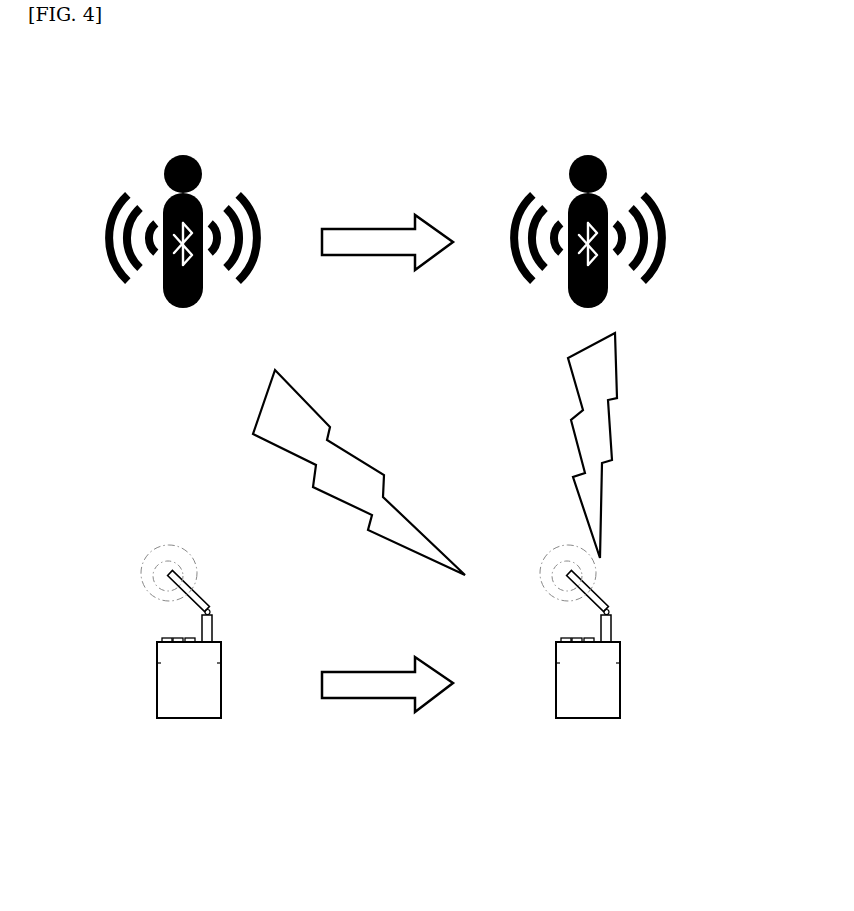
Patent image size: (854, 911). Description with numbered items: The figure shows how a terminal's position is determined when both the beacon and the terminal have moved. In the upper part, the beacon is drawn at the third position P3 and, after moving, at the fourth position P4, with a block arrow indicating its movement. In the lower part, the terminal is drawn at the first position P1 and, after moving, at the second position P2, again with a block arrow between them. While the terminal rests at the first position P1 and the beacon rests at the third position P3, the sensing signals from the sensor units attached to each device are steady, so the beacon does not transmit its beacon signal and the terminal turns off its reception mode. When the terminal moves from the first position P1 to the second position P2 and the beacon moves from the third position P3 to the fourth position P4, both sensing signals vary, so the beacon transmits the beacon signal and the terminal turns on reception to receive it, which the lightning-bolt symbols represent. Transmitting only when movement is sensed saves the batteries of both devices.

The first position P1 is at (181, 645).
The second position P2 is at (580, 645).
The third position P3 is at (183, 244).
The fourth position P4 is at (588, 244).